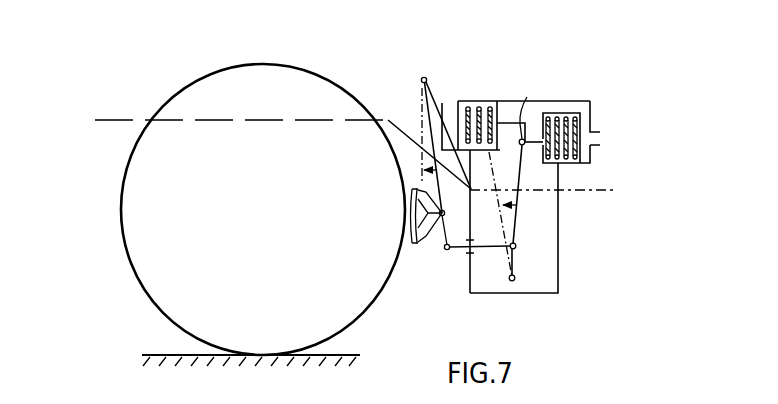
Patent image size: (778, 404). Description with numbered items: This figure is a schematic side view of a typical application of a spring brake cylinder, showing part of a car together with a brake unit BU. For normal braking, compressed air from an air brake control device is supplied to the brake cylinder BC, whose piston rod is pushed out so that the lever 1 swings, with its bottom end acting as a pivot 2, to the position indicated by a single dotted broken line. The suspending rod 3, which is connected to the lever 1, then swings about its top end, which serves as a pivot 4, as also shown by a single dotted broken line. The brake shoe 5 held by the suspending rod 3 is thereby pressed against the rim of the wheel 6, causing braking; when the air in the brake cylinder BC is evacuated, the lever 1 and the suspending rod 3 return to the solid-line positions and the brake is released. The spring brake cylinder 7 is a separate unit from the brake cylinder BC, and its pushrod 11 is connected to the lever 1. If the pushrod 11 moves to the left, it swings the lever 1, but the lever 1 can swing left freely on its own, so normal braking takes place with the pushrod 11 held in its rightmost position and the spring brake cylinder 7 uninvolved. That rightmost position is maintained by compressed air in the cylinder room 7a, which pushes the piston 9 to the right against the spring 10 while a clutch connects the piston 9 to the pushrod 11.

The lever 1 is at (517, 227).
The pivot 2 is at (513, 281).
The suspending rod 3 is at (428, 110).
The pivot 4 is at (421, 80).
The brake shoe 5 is at (417, 243).
The wheel 6 is at (382, 293).
The spring brake cylinder 7 is at (522, 101).
The cylinder room 7a is at (449, 112).
The piston 9 is at (455, 106).
The spring 10 is at (493, 105).
The pushrod 11 is at (531, 108).
The brake cylinder BC is at (595, 158).
The brake unit BU is at (563, 273).